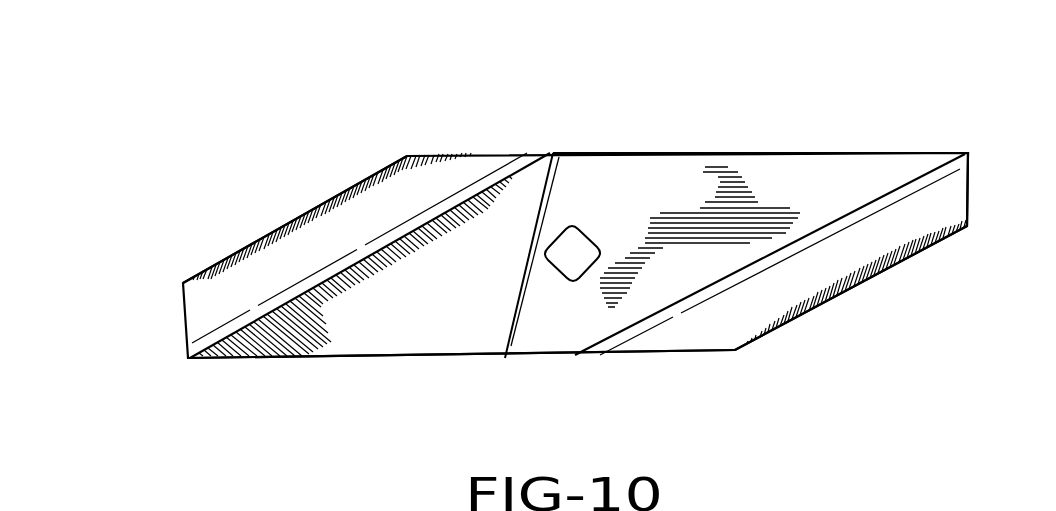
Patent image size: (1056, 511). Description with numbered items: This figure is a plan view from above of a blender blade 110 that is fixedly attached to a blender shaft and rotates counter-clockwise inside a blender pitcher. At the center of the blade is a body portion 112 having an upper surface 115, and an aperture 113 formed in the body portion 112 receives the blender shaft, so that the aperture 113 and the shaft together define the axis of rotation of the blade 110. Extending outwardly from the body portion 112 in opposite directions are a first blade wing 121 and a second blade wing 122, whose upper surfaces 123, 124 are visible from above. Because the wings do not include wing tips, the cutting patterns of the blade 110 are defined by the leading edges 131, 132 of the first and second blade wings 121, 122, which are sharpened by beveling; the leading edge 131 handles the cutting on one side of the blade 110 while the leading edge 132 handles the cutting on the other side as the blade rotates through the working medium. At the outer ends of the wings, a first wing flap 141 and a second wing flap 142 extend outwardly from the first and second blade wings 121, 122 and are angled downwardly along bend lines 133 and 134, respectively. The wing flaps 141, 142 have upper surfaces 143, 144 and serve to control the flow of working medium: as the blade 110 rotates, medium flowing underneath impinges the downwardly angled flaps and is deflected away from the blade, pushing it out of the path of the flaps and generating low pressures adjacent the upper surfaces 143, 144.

The blender blade 110 is at (278, 152).
The body portion 112 is at (623, 186).
The aperture 113 is at (582, 252).
The upper surface 115 is at (557, 315).
The first blade wing 121 is at (784, 151).
The second blade wing 122 is at (395, 312).
The upper surface 123 is at (860, 170).
The upper surface 124 is at (333, 315).
The leading edge 131 is at (724, 153).
The leading edge 132 is at (455, 358).
The bend line 133 is at (893, 192).
The bend line 134 is at (472, 198).
The first wing flap 141 is at (868, 286).
The second wing flap 142 is at (371, 167).
The upper surface 143 is at (725, 315).
The upper surface 144 is at (266, 238).